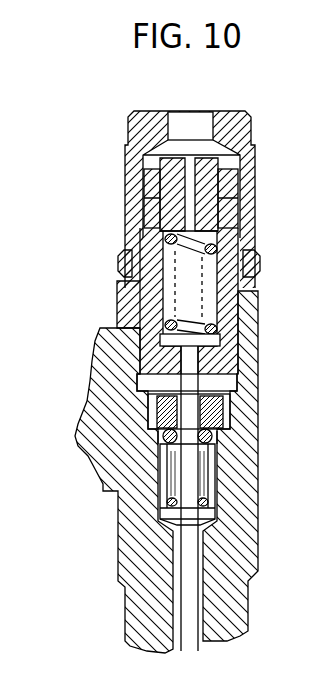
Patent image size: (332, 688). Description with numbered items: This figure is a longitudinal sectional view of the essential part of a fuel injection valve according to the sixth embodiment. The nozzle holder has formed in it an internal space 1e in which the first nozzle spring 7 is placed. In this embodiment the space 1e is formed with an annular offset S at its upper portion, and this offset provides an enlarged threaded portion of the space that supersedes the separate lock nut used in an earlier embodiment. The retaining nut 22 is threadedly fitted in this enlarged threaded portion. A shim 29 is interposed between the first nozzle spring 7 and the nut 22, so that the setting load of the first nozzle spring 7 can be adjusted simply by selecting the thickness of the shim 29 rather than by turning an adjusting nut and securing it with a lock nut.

The nut 22 is at (226, 409).
The shim 29 is at (217, 430).
The internal space 1e is at (232, 484).
The annular offset S is at (162, 430).
The first nozzle spring 7 is at (168, 501).